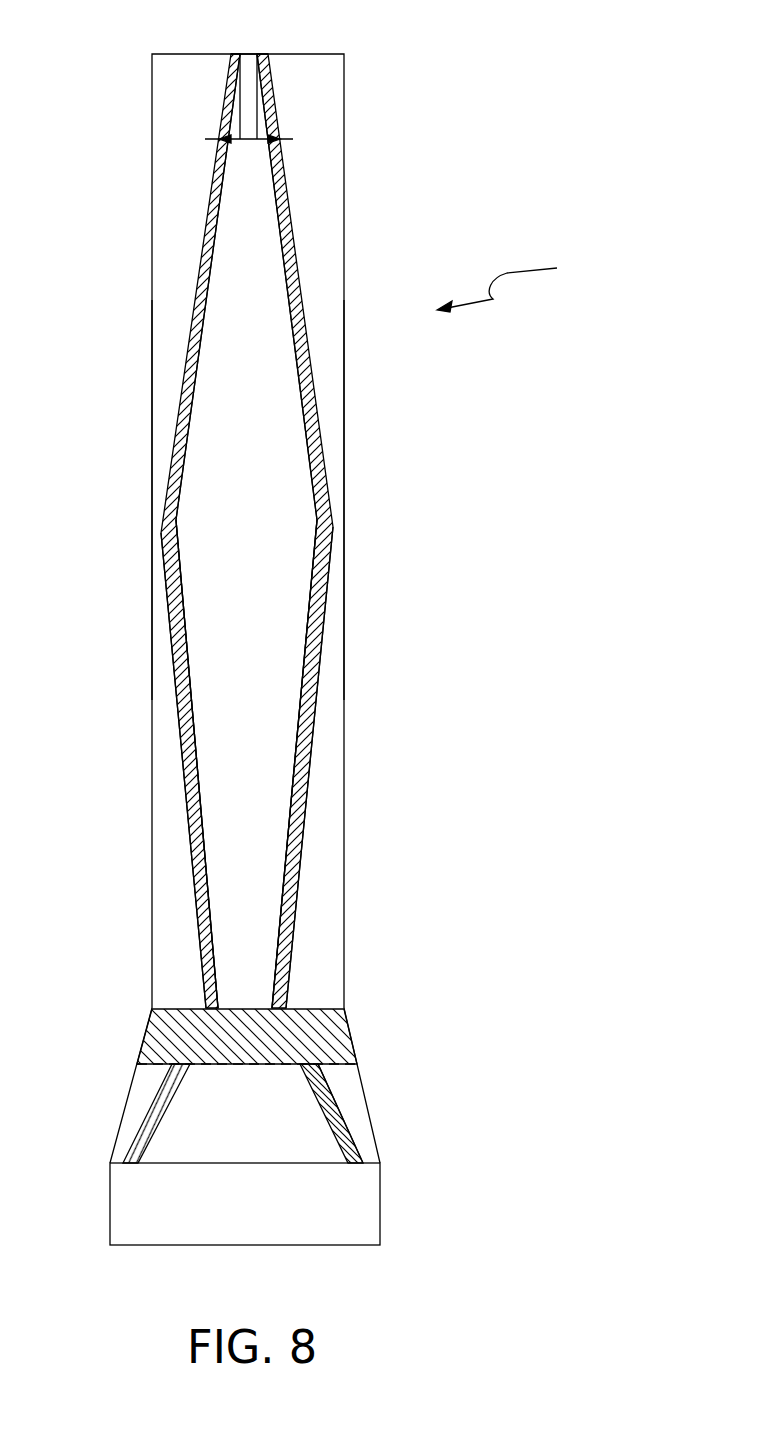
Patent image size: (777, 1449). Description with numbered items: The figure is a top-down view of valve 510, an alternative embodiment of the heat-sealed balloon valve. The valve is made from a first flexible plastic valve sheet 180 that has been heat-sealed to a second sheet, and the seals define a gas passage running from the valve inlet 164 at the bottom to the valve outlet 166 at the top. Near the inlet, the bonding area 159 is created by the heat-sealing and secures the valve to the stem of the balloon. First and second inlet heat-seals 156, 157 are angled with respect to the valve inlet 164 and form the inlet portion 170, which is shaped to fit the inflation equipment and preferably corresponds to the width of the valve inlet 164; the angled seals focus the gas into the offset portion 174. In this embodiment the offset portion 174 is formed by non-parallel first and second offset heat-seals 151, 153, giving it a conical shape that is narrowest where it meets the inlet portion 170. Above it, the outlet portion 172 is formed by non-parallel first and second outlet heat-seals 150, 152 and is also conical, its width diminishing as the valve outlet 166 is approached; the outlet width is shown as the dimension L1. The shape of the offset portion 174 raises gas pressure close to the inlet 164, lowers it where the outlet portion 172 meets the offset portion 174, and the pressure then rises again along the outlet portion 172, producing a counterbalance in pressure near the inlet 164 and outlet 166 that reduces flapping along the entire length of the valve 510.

The valve outlet 166 is at (250, 54).
The first flexible plastic valve sheet 180 is at (344, 148).
The opening diameter L1 is at (250, 142).
The outlet portion 172 is at (268, 232).
The valve 510 is at (523, 274).
The second outlet heat-seal 152 is at (190, 356).
The first outlet heat-seal 150 is at (300, 356).
The offset portion 174 is at (290, 740).
The second offset heat-seal 153 is at (190, 805).
The first offset heat-seal 151 is at (298, 803).
The bonding area 159 is at (355, 1045).
The second inlet heat-seal 157 is at (165, 1093).
The first inlet heat-seal 156 is at (320, 1095).
The inlet portion 170 is at (323, 1135).
The valve inlet 164 is at (243, 1246).